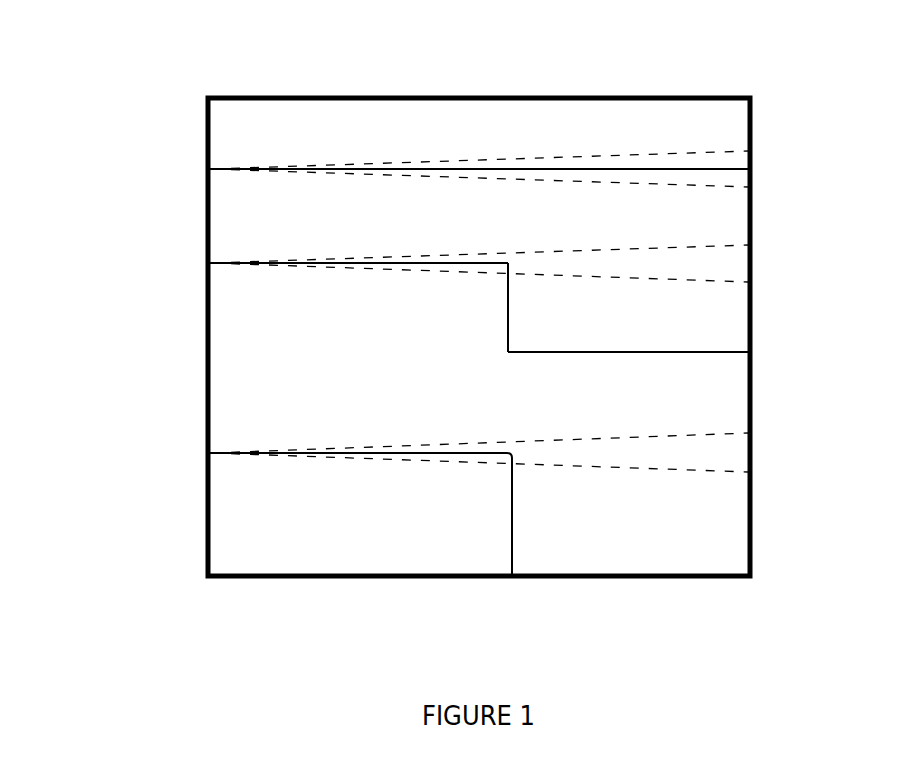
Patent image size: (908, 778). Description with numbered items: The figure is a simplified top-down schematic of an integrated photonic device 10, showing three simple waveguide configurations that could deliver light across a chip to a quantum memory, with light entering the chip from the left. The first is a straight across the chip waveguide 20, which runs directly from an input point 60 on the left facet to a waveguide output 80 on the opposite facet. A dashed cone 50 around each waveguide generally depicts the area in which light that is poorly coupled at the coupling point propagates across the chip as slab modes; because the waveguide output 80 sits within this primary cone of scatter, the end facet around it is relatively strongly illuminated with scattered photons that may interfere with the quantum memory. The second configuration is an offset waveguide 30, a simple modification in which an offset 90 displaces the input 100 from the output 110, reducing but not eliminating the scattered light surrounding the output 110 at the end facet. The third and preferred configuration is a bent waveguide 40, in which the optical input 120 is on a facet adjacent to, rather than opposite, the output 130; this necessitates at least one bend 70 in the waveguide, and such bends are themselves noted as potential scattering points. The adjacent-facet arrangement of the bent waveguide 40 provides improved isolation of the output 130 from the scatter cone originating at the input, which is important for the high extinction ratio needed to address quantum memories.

The integrated photonic device 10 is at (205, 113).
The straight across the chip waveguide 20 is at (636, 165).
The offset waveguide 30 is at (565, 348).
The bent waveguide 40 is at (502, 518).
The dashed cone 50 is at (571, 150).
The input point 60 is at (205, 168).
The waveguide bend 70 is at (522, 456).
The waveguide output 80 is at (757, 168).
The offset 90 is at (503, 290).
The input 100 is at (205, 262).
The output 110 is at (757, 352).
The optical input 120 is at (205, 452).
The output 130 is at (516, 566).